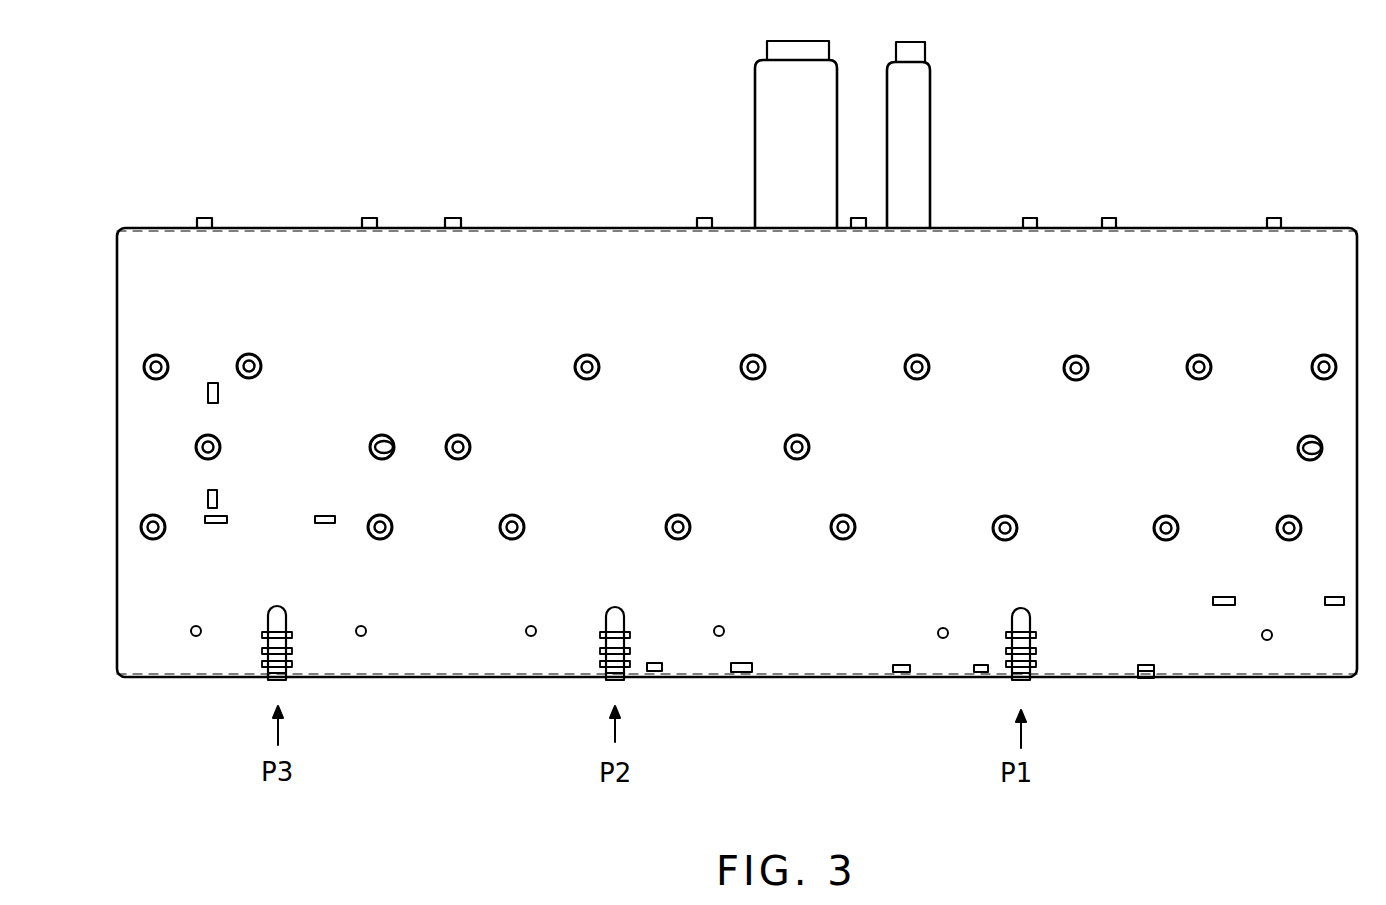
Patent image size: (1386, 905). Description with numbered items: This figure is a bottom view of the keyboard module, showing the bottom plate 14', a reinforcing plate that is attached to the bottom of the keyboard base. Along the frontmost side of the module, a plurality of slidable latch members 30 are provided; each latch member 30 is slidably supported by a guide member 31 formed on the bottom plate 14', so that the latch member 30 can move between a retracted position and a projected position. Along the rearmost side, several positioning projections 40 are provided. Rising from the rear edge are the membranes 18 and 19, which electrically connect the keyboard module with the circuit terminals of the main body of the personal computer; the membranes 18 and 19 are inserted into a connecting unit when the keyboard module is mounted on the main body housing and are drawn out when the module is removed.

The bottom plate 14' is at (737, 490).
The membrane 18 is at (920, 95).
The membrane 19 is at (770, 92).
The latch member 30 is at (281, 607).
The guide member 31 is at (254, 636).
The positioning projection 40 is at (702, 213).